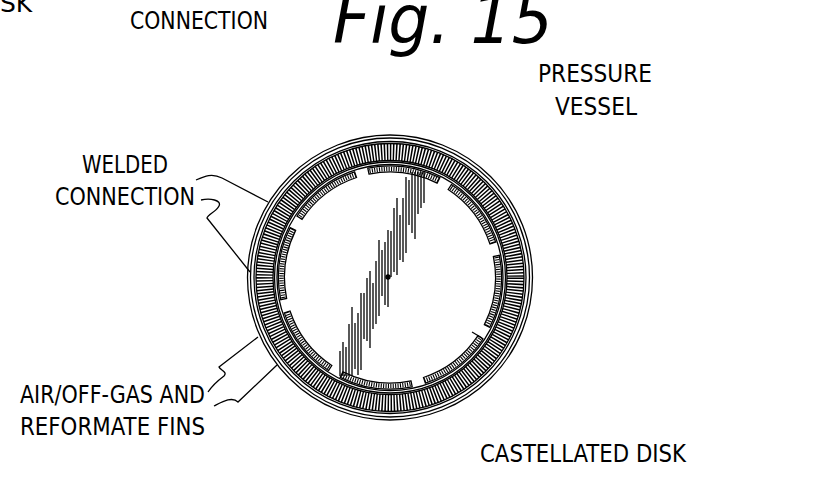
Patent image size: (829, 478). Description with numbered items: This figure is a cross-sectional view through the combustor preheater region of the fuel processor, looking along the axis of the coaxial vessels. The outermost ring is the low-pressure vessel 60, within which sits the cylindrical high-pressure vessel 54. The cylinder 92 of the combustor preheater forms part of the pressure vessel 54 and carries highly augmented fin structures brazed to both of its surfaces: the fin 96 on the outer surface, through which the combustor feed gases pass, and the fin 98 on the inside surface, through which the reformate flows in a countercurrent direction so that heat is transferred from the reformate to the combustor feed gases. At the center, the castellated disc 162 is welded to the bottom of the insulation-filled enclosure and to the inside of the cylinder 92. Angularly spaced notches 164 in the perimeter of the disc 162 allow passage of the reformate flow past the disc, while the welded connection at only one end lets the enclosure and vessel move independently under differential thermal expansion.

The high-pressure vessel 54 is at (488, 173).
The low-pressure vessel 60 is at (536, 249).
The cylinder 92 is at (493, 217).
The fin 96 is at (262, 325).
The fin 98 is at (254, 307).
The castellated disc 162 is at (505, 355).
The notches 164 is at (368, 138).